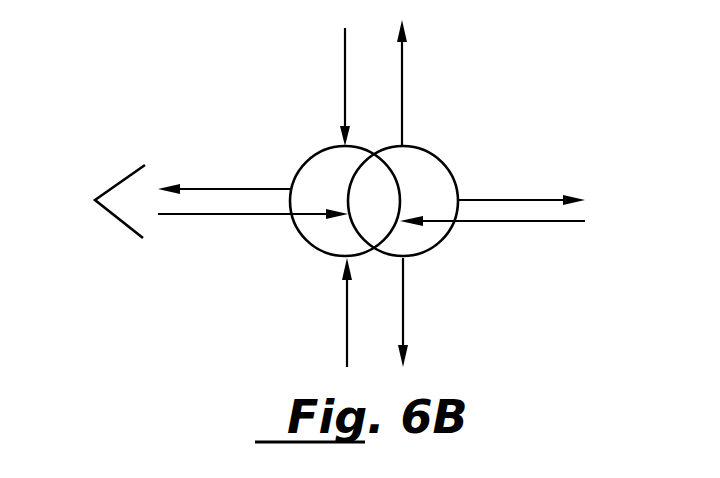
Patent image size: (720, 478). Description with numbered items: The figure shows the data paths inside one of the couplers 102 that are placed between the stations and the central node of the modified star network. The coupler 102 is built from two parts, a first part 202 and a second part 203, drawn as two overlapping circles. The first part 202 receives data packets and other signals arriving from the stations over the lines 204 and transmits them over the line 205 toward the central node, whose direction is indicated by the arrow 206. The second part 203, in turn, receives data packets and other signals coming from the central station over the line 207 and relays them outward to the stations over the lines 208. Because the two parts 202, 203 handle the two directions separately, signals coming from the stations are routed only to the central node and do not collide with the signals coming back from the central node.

The coupler 102 is at (409, 133).
The first coupler part 202 is at (310, 158).
The second coupler part 203 is at (436, 180).
The lines from stations 204 is at (343, 60).
The line to central node 205 is at (208, 189).
The arrow indicating direction of central node 206 is at (122, 222).
The line from central station 207 is at (222, 216).
The lines to stations 208 is at (402, 60).